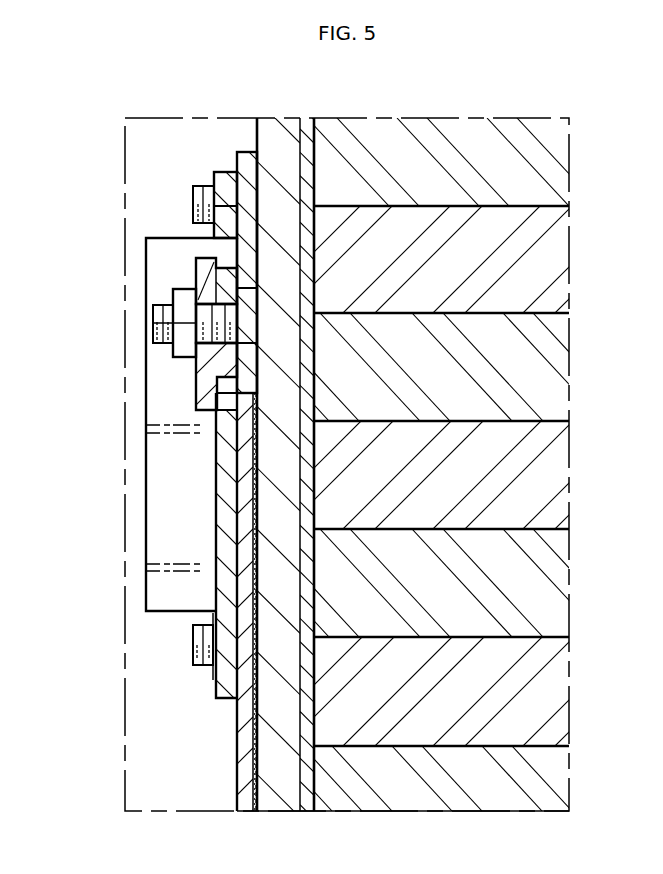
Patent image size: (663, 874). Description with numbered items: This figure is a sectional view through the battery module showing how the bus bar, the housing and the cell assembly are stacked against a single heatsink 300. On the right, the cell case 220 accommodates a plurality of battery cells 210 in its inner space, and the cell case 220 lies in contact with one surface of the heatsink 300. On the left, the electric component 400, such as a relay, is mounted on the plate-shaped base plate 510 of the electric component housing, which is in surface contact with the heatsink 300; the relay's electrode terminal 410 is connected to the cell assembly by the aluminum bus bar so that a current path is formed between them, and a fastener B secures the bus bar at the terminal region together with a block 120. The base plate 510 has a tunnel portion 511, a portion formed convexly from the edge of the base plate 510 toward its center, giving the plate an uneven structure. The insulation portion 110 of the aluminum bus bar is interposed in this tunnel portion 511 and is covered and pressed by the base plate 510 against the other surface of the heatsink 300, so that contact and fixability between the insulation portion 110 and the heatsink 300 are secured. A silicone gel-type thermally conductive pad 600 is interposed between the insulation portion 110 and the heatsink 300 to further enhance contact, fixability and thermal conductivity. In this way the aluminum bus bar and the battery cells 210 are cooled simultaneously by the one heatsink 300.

The insulation portion 110 is at (245, 760).
The support block 120 is at (205, 376).
The battery cells 210 is at (555, 255).
The cell case 220 is at (307, 132).
The heatsink 300 is at (280, 132).
The electric component 400 is at (162, 472).
The electrode terminal 410 is at (227, 279).
The base plate 510 is at (247, 160).
The tunnel portion 511 is at (228, 538).
The thermally conductive pad 600 is at (255, 810).
The bolt B is at (153, 314).